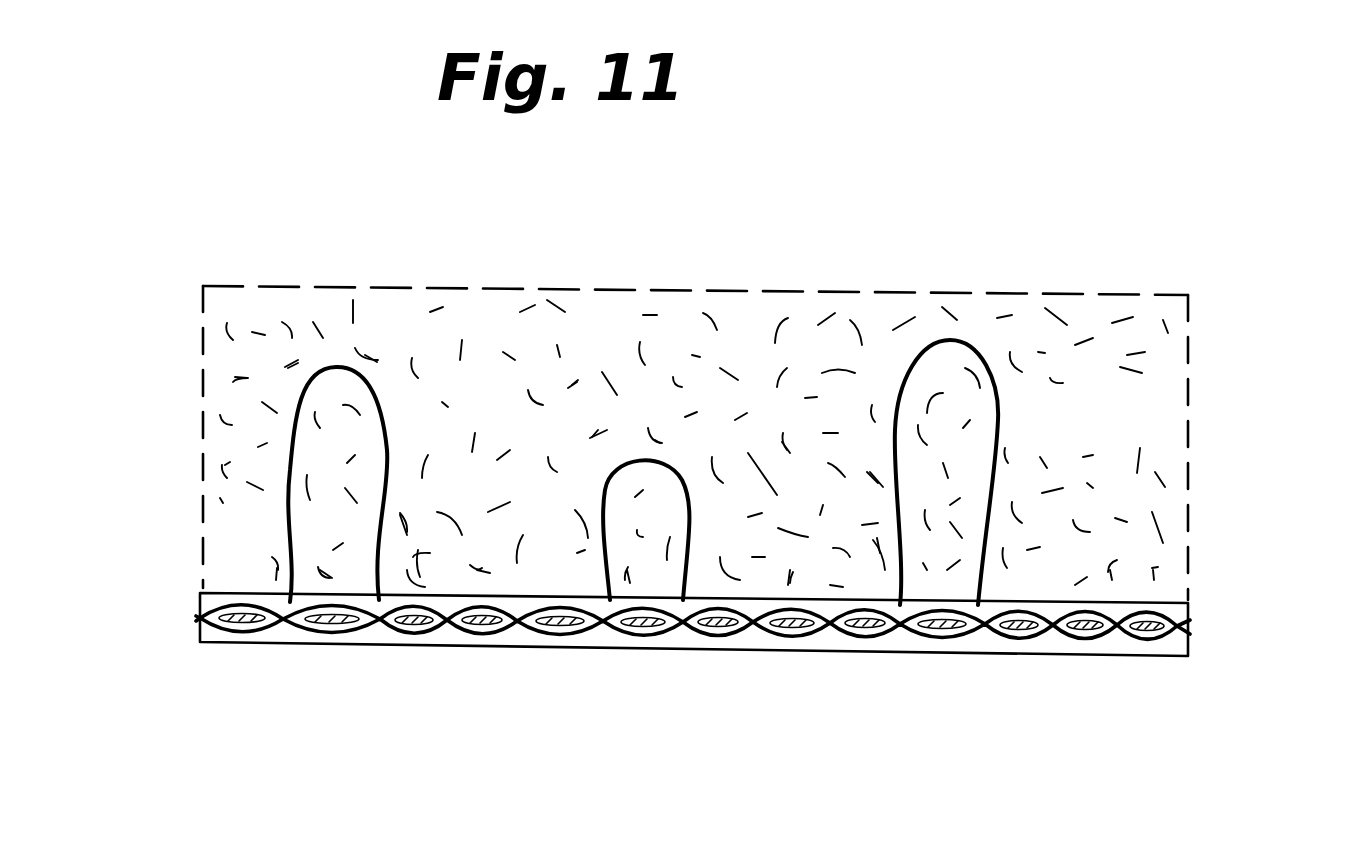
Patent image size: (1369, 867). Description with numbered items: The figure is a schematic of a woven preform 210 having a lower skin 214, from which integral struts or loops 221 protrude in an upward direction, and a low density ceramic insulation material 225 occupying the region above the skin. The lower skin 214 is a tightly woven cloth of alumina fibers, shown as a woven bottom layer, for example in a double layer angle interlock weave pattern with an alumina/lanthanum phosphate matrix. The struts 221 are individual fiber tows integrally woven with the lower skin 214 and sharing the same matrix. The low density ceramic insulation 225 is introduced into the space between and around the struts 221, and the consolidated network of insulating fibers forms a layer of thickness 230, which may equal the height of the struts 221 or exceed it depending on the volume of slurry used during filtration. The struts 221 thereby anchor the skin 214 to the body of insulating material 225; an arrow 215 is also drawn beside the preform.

The woven preform 210 is at (494, 654).
The lower skin 214 is at (756, 656).
The direction arrow 215 is at (1250, 418).
The struts 221 is at (291, 481).
The low density ceramic insulation material 225 is at (889, 295).
The thickness 230 is at (112, 284).